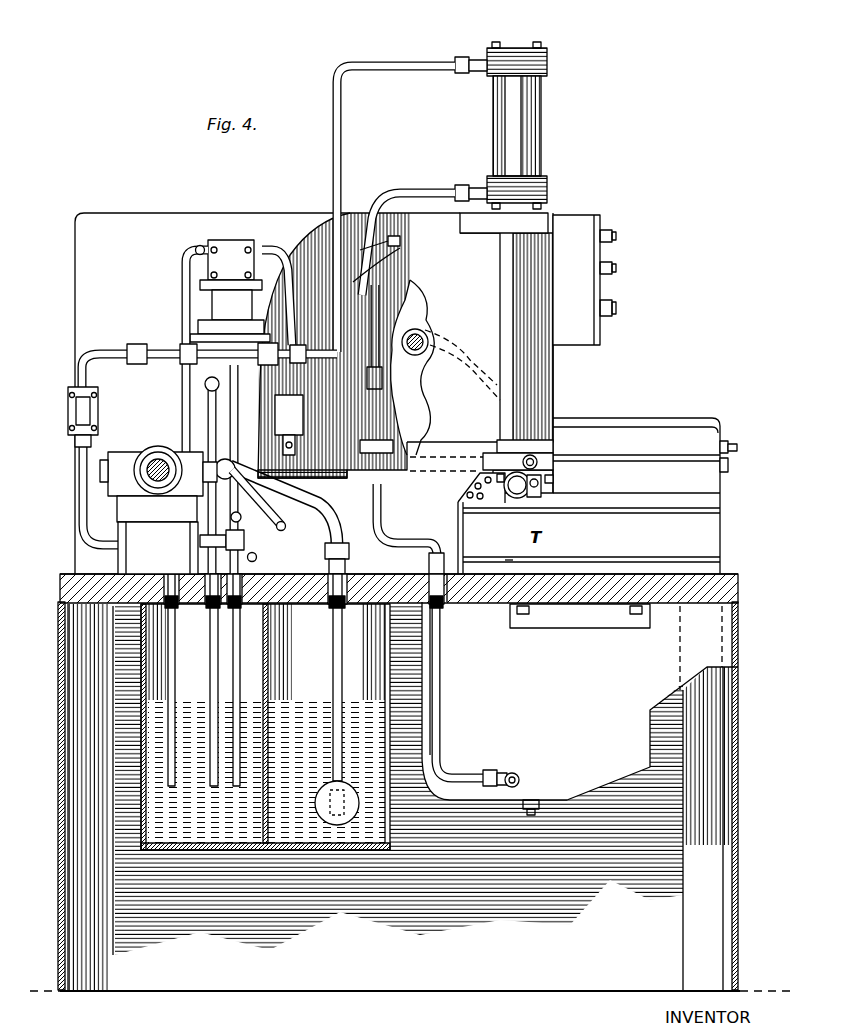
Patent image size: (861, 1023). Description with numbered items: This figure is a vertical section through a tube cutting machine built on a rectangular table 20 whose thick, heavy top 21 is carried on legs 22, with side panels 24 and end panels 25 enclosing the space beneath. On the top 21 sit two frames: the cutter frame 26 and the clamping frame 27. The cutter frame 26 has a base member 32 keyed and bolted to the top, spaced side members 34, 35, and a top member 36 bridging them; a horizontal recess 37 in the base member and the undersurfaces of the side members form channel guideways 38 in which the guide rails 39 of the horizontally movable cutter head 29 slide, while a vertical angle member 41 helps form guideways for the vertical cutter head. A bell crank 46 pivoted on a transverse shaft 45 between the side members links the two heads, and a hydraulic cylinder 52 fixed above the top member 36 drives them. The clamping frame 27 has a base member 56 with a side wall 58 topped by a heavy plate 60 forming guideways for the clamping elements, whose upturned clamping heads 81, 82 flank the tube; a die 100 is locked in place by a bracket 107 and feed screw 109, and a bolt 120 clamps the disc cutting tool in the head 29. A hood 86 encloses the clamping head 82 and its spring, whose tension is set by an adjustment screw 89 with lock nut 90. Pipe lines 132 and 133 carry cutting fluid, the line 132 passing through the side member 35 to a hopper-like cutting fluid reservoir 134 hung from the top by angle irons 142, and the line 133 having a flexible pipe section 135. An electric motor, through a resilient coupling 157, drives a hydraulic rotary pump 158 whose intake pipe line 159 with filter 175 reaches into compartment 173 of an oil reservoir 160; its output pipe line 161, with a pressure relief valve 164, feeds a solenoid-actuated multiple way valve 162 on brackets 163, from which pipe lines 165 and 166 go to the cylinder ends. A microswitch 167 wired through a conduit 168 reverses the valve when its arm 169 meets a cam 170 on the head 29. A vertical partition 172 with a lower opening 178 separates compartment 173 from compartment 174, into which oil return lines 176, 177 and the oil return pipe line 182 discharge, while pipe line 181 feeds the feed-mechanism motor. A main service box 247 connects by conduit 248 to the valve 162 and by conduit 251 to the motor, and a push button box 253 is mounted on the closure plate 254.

The table 20 is at (56, 588).
The top 21 is at (574, 585).
The legs 22 is at (66, 760).
The side panels 24 is at (240, 950).
The end panels 25 is at (60, 876).
The cutter frame 26 is at (448, 602).
The frame 27 is at (708, 528).
The horizontally movable tube cutter head 29 is at (540, 449).
The base member 32 is at (463, 548).
The side member 34 is at (323, 243).
The side member 35 is at (487, 358).
The top member 36 is at (532, 220).
The recess 37 is at (361, 504).
The channel guideways 38 is at (271, 500).
The guide rails 39 is at (393, 470).
The angle member 41 is at (553, 355).
The transverse shaft 45 is at (420, 336).
The bell crank 46 is at (418, 380).
The hydraulic cylinder 52 is at (527, 137).
The base member 56 is at (510, 563).
The side wall 58 is at (680, 540).
The plate 60 is at (630, 510).
The clamping head 81 is at (466, 498).
The clamping head 82 is at (540, 502).
The hood 86 is at (675, 420).
The adjustment screw 89 is at (735, 456).
The lock nut 90 is at (729, 467).
The die 100 is at (521, 502).
The bracket 107 is at (492, 500).
The feed screw 109 is at (547, 499).
The bolt 120 is at (538, 461).
The pipe line 132 is at (413, 284).
The pipe line 133 is at (400, 242).
The cutting fluid reservoir 134 is at (568, 782).
The flexible pipe section 135 is at (353, 283).
The angle irons 142 is at (563, 620).
The resilient coupling 157 is at (140, 466).
The hydraulic rotary pump 158 is at (123, 483).
The pipe line 159 is at (333, 535).
The oil reservoir 160 is at (345, 853).
The pipe line 161 is at (107, 348).
The solenoid-actuated multiple way valve 162 is at (232, 258).
The brackets 163 is at (193, 346).
The pressure relief valve 164 is at (68, 398).
The pipe line 165 is at (333, 98).
The pipe line 166 is at (400, 187).
The microswitch 167 is at (287, 401).
The conduit 168 is at (277, 300).
The arm 169 is at (313, 468).
The cam 170 is at (385, 440).
The vertical partition 172 is at (268, 661).
The compartment 173 is at (437, 653).
The compartment 174 is at (153, 673).
The filter 175 is at (442, 780).
The oil return line 176 is at (210, 390).
The oil return line 177 is at (78, 443).
The opening 178 is at (272, 840).
The pipe line 181 is at (256, 492).
The oil return pipe line 182 is at (246, 515).
The main service box 247 is at (153, 218).
The conduit 248 is at (188, 278).
The conduit 251 is at (254, 555).
The push button box 253 is at (585, 298).
The closure plate 254 is at (547, 268).